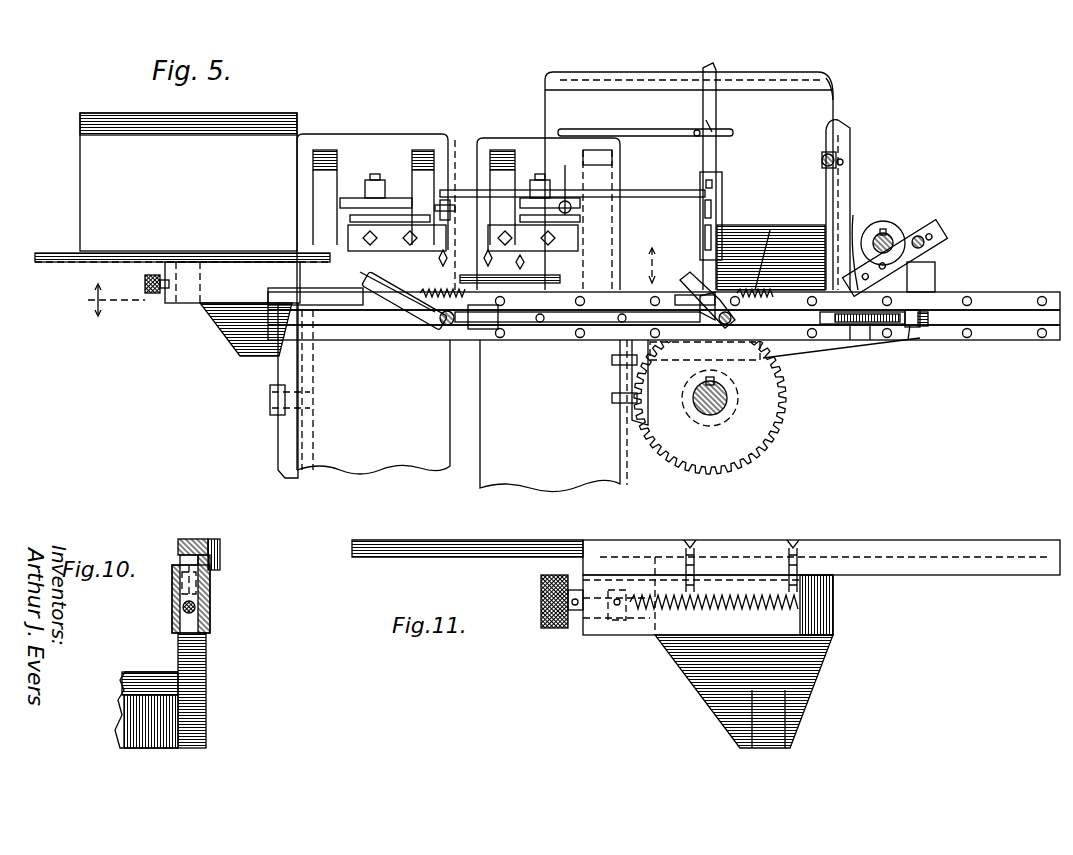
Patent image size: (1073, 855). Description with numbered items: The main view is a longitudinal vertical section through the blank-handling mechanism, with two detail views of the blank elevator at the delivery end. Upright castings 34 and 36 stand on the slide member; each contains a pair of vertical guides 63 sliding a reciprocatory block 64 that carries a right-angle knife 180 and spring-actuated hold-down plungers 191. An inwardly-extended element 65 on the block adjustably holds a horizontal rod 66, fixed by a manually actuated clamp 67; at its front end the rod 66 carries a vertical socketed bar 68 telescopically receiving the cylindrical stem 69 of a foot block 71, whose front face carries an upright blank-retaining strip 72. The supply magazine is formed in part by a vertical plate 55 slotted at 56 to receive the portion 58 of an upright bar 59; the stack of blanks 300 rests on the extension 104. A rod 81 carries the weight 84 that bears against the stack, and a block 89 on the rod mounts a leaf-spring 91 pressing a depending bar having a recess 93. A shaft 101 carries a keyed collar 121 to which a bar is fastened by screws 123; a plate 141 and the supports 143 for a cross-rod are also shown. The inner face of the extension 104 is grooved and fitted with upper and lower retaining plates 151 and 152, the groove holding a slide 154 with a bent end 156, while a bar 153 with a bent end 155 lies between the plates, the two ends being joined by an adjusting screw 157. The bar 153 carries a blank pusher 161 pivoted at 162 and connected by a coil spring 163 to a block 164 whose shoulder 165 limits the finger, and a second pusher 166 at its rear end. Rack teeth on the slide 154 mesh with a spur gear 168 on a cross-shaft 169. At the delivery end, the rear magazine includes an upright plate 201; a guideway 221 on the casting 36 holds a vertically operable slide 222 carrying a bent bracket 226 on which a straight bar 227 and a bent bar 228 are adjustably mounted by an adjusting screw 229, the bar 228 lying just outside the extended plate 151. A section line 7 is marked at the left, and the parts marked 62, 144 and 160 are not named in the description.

In FIG. 5, the upright plate 201 is at (188, 182).
In FIG. 5, the horizontal straight bar 227 is at (62, 254).
In FIG. 10, the horizontal straight bar 227 is at (180, 540).
In FIG. 11, the horizontal straight bar 227 is at (490, 540).
In FIG. 5, the horizontal bent bar 228 is at (315, 295).
In FIG. 10, the horizontal bent bar 228 is at (221, 553).
In FIG. 11, the horizontal bent bar 228 is at (998, 540).
In FIG. 5, the adjusting screw 229 is at (150, 294).
In FIG. 10, the adjusting screw 229 is at (172, 616).
In FIG. 11, the adjusting screw 229 is at (548, 628).
In FIG. 5, the bent bracket 226 is at (240, 335).
In FIG. 10, the bent bracket 226 is at (207, 666).
In FIG. 11, the bent bracket 226 is at (833, 648).
In FIG. 5, the guideway 221 is at (278, 412).
In FIG. 5, the vertically-operable slide 222 is at (280, 466).
In FIG. 5, the section line 7 is at (365, 280).
In FIG. 5, the upright casting 36 is at (376, 304).
In FIG. 5, the upright casting 34 is at (548, 315).
In FIG. 5, the vertical guides 63 is at (335, 183).
In FIG. 5, the vertical reciprocatory block 64 is at (375, 190).
In FIG. 5, the inwardly-extended element 65 is at (534, 195).
In FIG. 5, the manually actuated clamp 67 is at (572, 209).
In FIG. 5, the horizontal rod 66 is at (625, 190).
In FIG. 5, the slot 56 is at (650, 129).
In FIG. 5, the upright bar 59 is at (708, 118).
In FIG. 5, the portion 58 is at (697, 138).
In FIG. 5, the vertical plate 55 is at (840, 392).
In FIG. 5, the housing edge 62 is at (834, 98).
In FIG. 5, the blank-retaining strip 72 is at (716, 165).
In FIG. 5, the socketed bar 68 is at (724, 185).
In FIG. 5, the stack of blanks 300 is at (738, 228).
In FIG. 5, the coil contractile spring 163 is at (762, 260).
In FIG. 5, the weight 84 is at (827, 200).
In FIG. 5, the rod 81 is at (836, 158).
In FIG. 5, the block 89 is at (822, 158).
In FIG. 5, the leaf-spring 91 is at (843, 162).
In FIG. 5, the recess 93 is at (860, 250).
In FIG. 5, the shaft 101 is at (893, 224).
In FIG. 5, the collar 121 is at (882, 222).
In FIG. 5, the angled plate 144 is at (925, 218).
In FIG. 5, the plate 141 is at (928, 238).
In FIG. 5, the supports 143 is at (918, 275).
In FIG. 5, the upper retaining plate 151 is at (983, 296).
In FIG. 5, the lower retaining plate 152 is at (948, 340).
In FIG. 5, the extension 104 is at (1005, 310).
In FIG. 5, the bar 153 is at (562, 340).
In FIG. 5, the blank pusher 166 is at (392, 305).
In FIG. 5, the right-angle knife 180 is at (440, 325).
In FIG. 5, the spring-actuated plungers 191 is at (478, 278).
In FIG. 5, the slide bar 160 is at (528, 322).
In FIG. 5, the pivot 162 is at (740, 322).
In FIG. 5, the foot block 71 is at (695, 309).
In FIG. 5, the blank pusher 161 is at (690, 280).
In FIG. 5, the cylindrical stem 69 is at (703, 268).
In FIG. 5, the shoulder 165 is at (780, 335).
In FIG. 5, the block 164 is at (862, 306).
In FIG. 5, the screws 123 is at (919, 308).
In FIG. 5, the inwardly bent end 156 is at (885, 330).
In FIG. 5, the adjusting screw 157 is at (892, 328).
In FIG. 5, the slide 154 is at (868, 328).
In FIG. 5, the bent end 155 is at (855, 335).
In FIG. 5, the spur gear 168 is at (775, 425).
In FIG. 5, the cross-shaft 169 is at (716, 416).